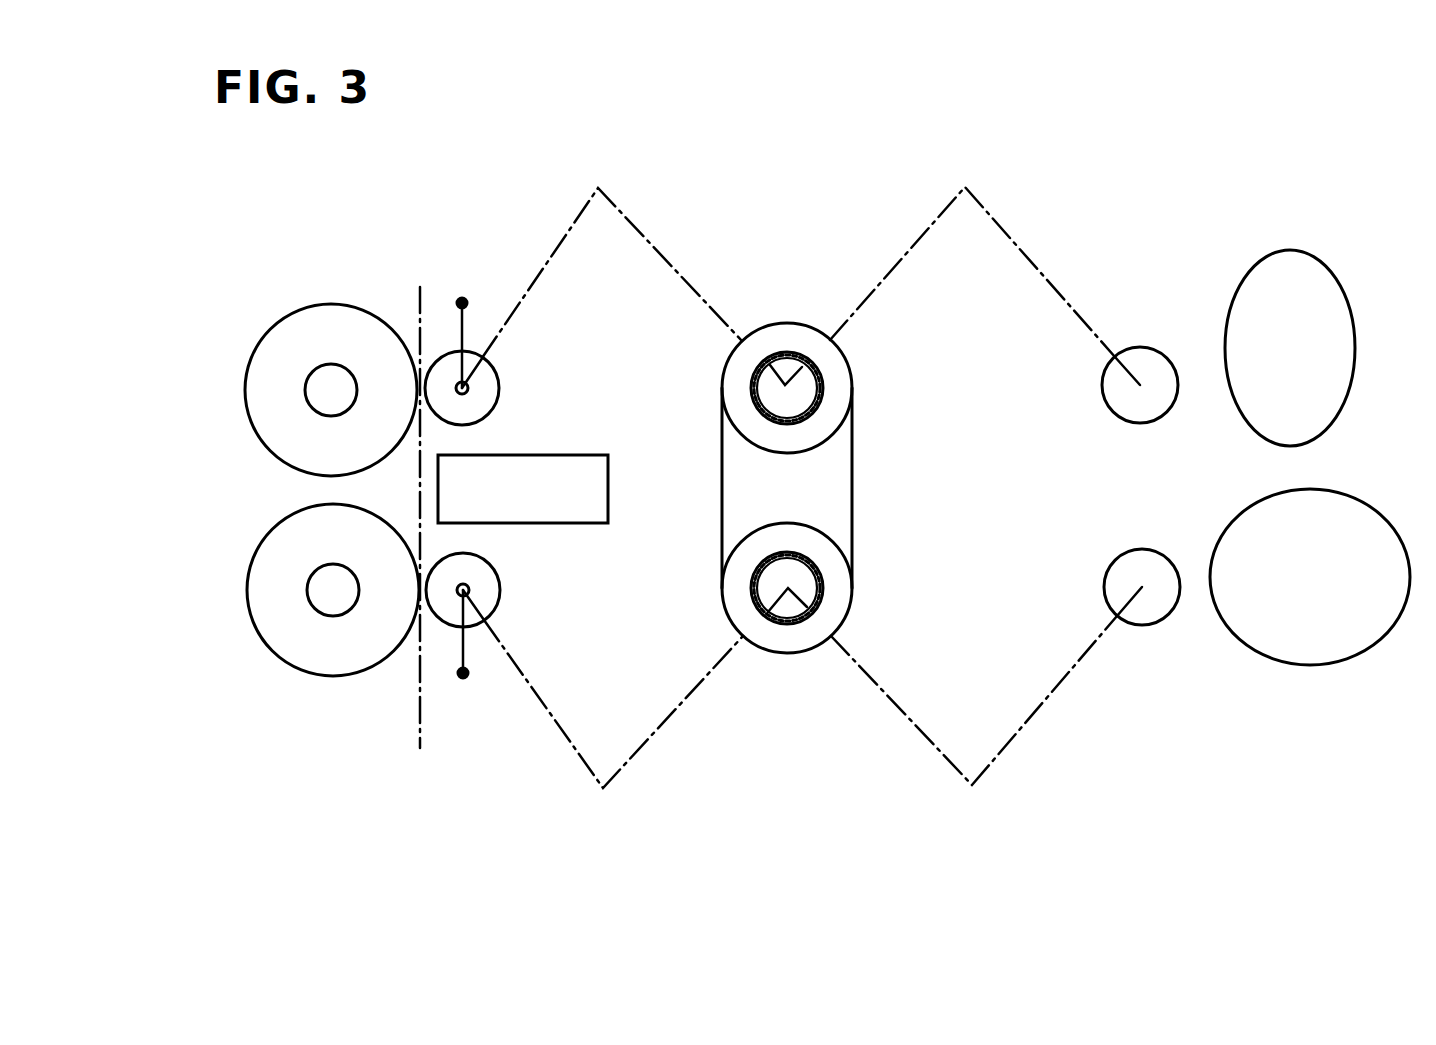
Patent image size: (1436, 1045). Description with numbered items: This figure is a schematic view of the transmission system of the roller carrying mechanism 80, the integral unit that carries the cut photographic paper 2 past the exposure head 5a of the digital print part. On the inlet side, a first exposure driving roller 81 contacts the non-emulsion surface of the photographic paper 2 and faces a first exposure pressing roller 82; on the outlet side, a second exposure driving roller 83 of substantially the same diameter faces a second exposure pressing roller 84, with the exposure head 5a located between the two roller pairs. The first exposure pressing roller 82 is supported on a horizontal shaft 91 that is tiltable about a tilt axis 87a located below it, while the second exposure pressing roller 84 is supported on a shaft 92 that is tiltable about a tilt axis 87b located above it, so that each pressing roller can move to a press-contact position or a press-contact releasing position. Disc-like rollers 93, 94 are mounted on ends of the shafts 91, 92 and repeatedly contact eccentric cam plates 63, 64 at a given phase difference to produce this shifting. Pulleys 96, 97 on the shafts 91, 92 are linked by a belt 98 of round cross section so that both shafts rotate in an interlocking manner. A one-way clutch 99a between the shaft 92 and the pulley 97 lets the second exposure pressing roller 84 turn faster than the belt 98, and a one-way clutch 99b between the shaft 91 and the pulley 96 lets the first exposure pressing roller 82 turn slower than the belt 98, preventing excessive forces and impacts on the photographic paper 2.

The cut photographic paper 2 is at (422, 698).
The exposure head 5a is at (565, 456).
The eccentric cam plate 63 is at (1370, 652).
The eccentric cam plate 64 is at (1335, 274).
The roller carrying mechanism 80 is at (886, 146).
The first exposure driving roller 81 is at (262, 648).
The first exposure pressing roller 82 is at (500, 594).
The second exposure driving roller 83 is at (263, 340).
The second exposure pressing roller 84 is at (440, 350).
The tilt axis 87a is at (463, 676).
The tilt axis 87b is at (462, 300).
The shaft 91 is at (985, 767).
The shaft 92 is at (1005, 226).
The disc-like roller 93 is at (1155, 625).
The disc-like roller 94 is at (1134, 346).
The pulley 96 is at (777, 656).
The pulley 97 is at (772, 322).
The belt 98 is at (855, 488).
The one-way clutch 99a is at (818, 365).
The one-way clutch 99b is at (820, 583).